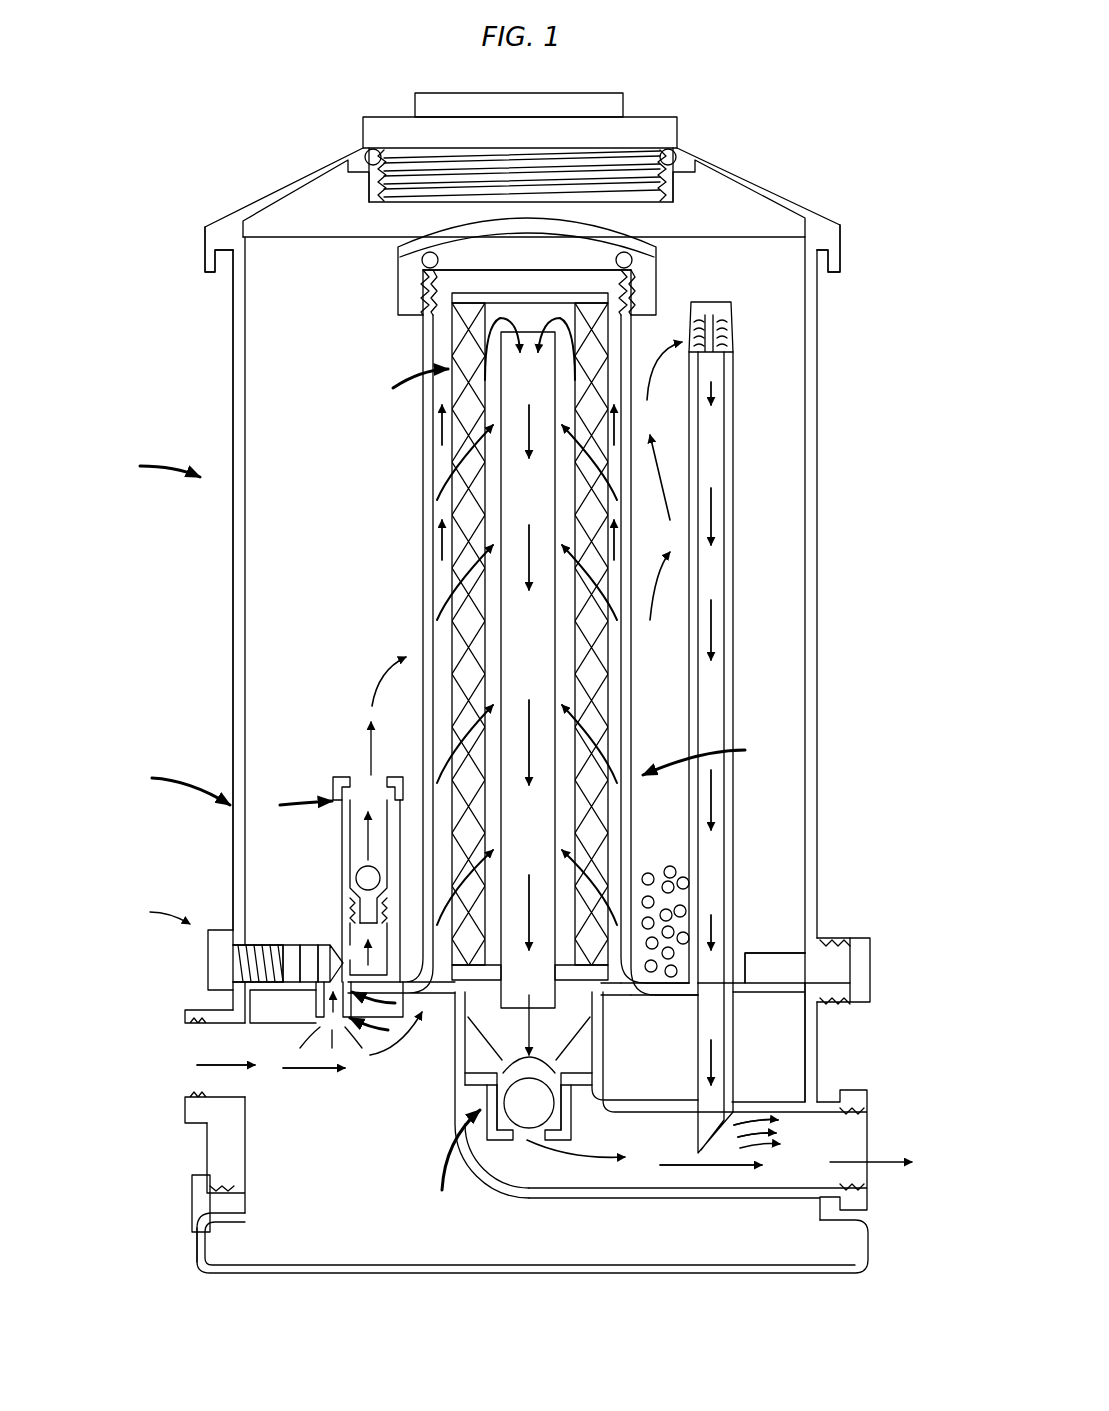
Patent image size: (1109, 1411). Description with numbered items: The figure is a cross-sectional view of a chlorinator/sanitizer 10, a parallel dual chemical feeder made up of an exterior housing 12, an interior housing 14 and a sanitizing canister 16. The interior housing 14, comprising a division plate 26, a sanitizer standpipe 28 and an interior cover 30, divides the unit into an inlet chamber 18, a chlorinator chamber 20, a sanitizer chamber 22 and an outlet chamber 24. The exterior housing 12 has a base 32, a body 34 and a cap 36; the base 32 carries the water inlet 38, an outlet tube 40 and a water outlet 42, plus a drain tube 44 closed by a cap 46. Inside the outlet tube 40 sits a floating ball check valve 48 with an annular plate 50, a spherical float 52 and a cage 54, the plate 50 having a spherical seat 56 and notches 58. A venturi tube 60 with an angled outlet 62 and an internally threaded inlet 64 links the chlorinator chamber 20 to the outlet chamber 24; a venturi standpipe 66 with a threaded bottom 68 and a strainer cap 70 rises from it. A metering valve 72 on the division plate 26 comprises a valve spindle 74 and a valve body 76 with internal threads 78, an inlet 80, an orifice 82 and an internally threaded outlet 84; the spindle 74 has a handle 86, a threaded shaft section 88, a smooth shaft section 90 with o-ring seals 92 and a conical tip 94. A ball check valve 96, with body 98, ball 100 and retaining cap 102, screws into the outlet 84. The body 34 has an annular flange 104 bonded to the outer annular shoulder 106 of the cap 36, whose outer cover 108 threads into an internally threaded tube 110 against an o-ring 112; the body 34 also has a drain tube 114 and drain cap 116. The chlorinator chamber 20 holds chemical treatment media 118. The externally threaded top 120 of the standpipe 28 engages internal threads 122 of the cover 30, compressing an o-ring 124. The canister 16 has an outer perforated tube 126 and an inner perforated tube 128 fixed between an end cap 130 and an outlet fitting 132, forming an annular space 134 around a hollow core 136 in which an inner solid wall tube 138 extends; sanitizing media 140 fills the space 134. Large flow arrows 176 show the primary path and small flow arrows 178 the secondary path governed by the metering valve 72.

The chlorinator/sanitizer 10 is at (154, 466).
The exterior housing 12 is at (186, 775).
The interior housing 14 is at (711, 755).
The sanitizing canister 16 is at (407, 387).
The inlet chamber 18 is at (243, 1133).
The chlorinator chamber 20 is at (236, 420).
The sanitizer chamber 22 is at (437, 540).
The outlet chamber 24 is at (585, 1178).
The division plate 26 is at (666, 976).
The sanitizer standpipe 28 is at (682, 625).
The interior cover 30 is at (648, 250).
The base 32 is at (240, 1278).
The body 34 is at (233, 690).
The cap 36 is at (302, 166).
The water inlet 38 is at (185, 1040).
The outlet tube 40 is at (456, 1055).
The water outlet 42 is at (865, 1190).
The drain tube 44 is at (200, 1236).
The cap 46 is at (192, 1200).
The floating ball check valve 48 is at (454, 1163).
The annular plate 50 is at (488, 1110).
The spherical float 52 is at (536, 1112).
The cage 54 is at (506, 1142).
The spherical seat 56 is at (563, 1100).
The notches 58 is at (590, 1065).
The venturi tube 60 is at (736, 1075).
The angled outlet 62 is at (768, 1128).
The inlet 64 is at (788, 952).
The venturi standpipe 66 is at (730, 725).
The threaded bottom 68 is at (750, 966).
The strainer cap 70 is at (716, 340).
The metering valve 72 is at (384, 1001).
The valve spindle 74 is at (158, 910).
The valve body 76 is at (379, 1027).
The internal threads 78 is at (262, 944).
The inlet 80 is at (318, 1026).
The orifice 82 is at (320, 995).
The internally threaded outlet 84 is at (338, 915).
The handle 86 is at (208, 966).
The threaded shaft section 88 is at (232, 942).
The smooth shaft section 90 is at (282, 945).
The o-ring seals 92 is at (300, 945).
The conical tip 94 is at (319, 945).
The ball check valve 96 is at (326, 885).
The body 98 is at (340, 790).
The ball 100 is at (360, 868).
The retaining cap 102 is at (352, 776).
The annular flange 104 is at (828, 272).
The outer annular shoulder 106 is at (226, 222).
The outer cover 108 is at (680, 135).
The internally threaded tube 110 is at (690, 190).
The o-ring 112 is at (367, 150).
The drain tube 114 is at (850, 1002).
The drain cap 116 is at (872, 968).
The chemical treatment media 118 is at (670, 868).
The externally threaded top 120 is at (426, 320).
The internal threads 122 is at (420, 282).
The o-ring 124 is at (630, 263).
The outer perforated tube 126 is at (638, 445).
The inner perforated tube 128 is at (612, 530).
The end cap 130 is at (500, 298).
The outlet fitting 132 is at (600, 980).
The annular space 134 is at (462, 507).
The hollow core 136 is at (620, 298).
The inner solid wall tube 138 is at (560, 662).
The sanitizing media 140 is at (600, 700).
The large flow arrows 176 is at (400, 1065).
The small flow arrows 178 is at (372, 706).